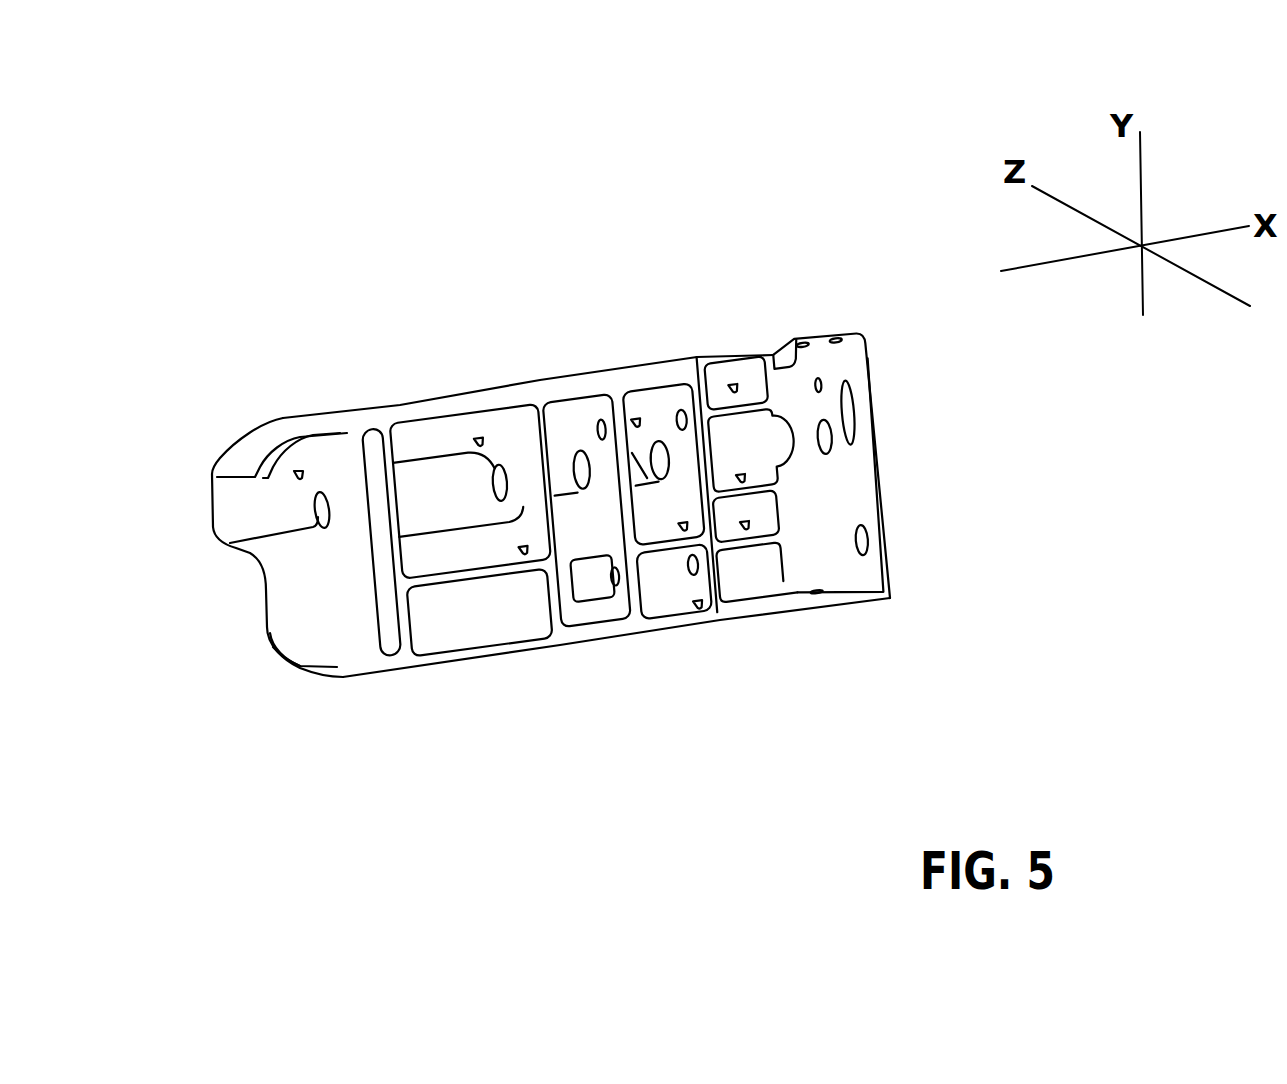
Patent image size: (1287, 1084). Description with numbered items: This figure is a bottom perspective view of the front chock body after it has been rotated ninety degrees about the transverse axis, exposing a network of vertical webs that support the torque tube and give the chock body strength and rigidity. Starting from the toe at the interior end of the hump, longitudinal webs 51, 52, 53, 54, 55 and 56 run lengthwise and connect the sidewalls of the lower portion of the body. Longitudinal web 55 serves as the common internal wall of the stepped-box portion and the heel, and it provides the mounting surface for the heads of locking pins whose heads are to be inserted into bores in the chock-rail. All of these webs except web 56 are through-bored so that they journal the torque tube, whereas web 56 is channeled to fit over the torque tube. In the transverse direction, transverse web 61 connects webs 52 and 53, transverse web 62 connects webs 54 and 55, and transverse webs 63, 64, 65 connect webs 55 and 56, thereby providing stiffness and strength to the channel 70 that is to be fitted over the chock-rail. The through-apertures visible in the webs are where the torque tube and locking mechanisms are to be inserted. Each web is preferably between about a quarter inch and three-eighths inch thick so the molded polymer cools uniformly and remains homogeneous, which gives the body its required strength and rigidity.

The longitudinal web 51 is at (370, 567).
The longitudinal web 52 is at (381, 542).
The longitudinal web 53 is at (587, 510).
The longitudinal web 54 is at (664, 464).
The longitudinal web 55 is at (707, 484).
The longitudinal web 56 is at (746, 516).
The transverse web 61 is at (480, 613).
The transverse web 62 is at (674, 581).
The transverse web 63 is at (756, 571).
The transverse web 64 is at (752, 449).
The transverse web 65 is at (831, 470).
The channel 70 is at (736, 383).